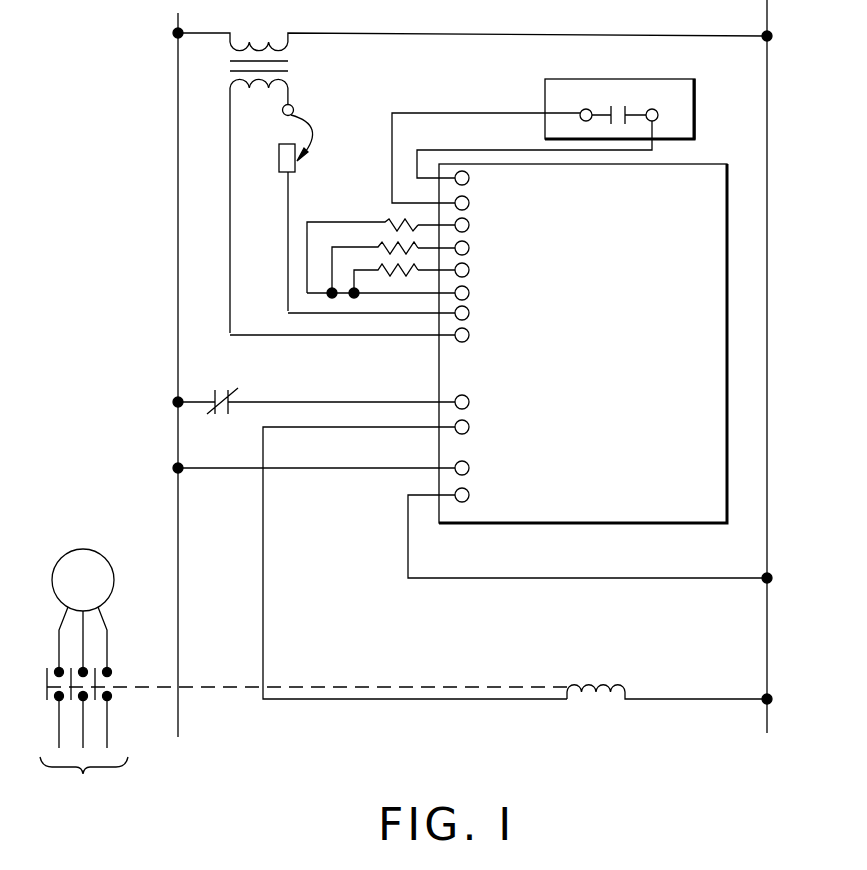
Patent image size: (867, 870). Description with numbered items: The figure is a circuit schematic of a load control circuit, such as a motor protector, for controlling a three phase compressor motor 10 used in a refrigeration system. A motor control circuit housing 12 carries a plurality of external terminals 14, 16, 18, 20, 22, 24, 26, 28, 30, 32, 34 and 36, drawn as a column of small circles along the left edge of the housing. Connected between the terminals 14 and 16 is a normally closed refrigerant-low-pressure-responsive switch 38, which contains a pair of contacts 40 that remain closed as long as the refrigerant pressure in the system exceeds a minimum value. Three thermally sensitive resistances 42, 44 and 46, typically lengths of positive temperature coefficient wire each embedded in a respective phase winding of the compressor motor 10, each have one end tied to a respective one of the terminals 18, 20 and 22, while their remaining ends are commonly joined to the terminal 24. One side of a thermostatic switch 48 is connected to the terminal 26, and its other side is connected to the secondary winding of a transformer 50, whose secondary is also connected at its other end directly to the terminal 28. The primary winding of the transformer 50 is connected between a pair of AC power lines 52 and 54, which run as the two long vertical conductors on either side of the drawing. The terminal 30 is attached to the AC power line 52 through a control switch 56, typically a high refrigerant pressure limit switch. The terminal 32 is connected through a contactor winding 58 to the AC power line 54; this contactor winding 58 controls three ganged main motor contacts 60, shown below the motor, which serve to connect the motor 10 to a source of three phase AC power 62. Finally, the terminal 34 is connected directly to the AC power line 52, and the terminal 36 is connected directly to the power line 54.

The compressor motor 10 is at (114, 580).
The motor control circuit housing 12 is at (730, 200).
The terminal 14 is at (534, 157).
The terminal 16 is at (486, 165).
The terminal 18 is at (460, 227).
The terminal 20 is at (471, 250).
The terminal 22 is at (460, 272).
The terminal 24 is at (416, 295).
The terminal 26 is at (395, 315).
The terminal 28 is at (377, 337).
The terminal 30 is at (340, 404).
The terminal 32 is at (415, 558).
The terminal 34 is at (340, 470).
The terminal 36 is at (587, 531).
The refrigerant-low-pressure-responsive switch 38 is at (704, 106).
The contacts 40 is at (615, 104).
The thermally sensitive resistance 42 is at (385, 222).
The thermally sensitive resistance 44 is at (380, 243).
The thermally sensitive resistance 46 is at (383, 275).
The thermostatic switch 48 is at (308, 128).
The transformer 50 is at (286, 52).
The AC power line 52 is at (178, 100).
The AC power line 54 is at (768, 74).
The control switch 56 is at (233, 390).
The contactor winding 58 is at (626, 688).
The main motor contacts 60 is at (112, 671).
The source of three phase AC power 62 is at (84, 753).